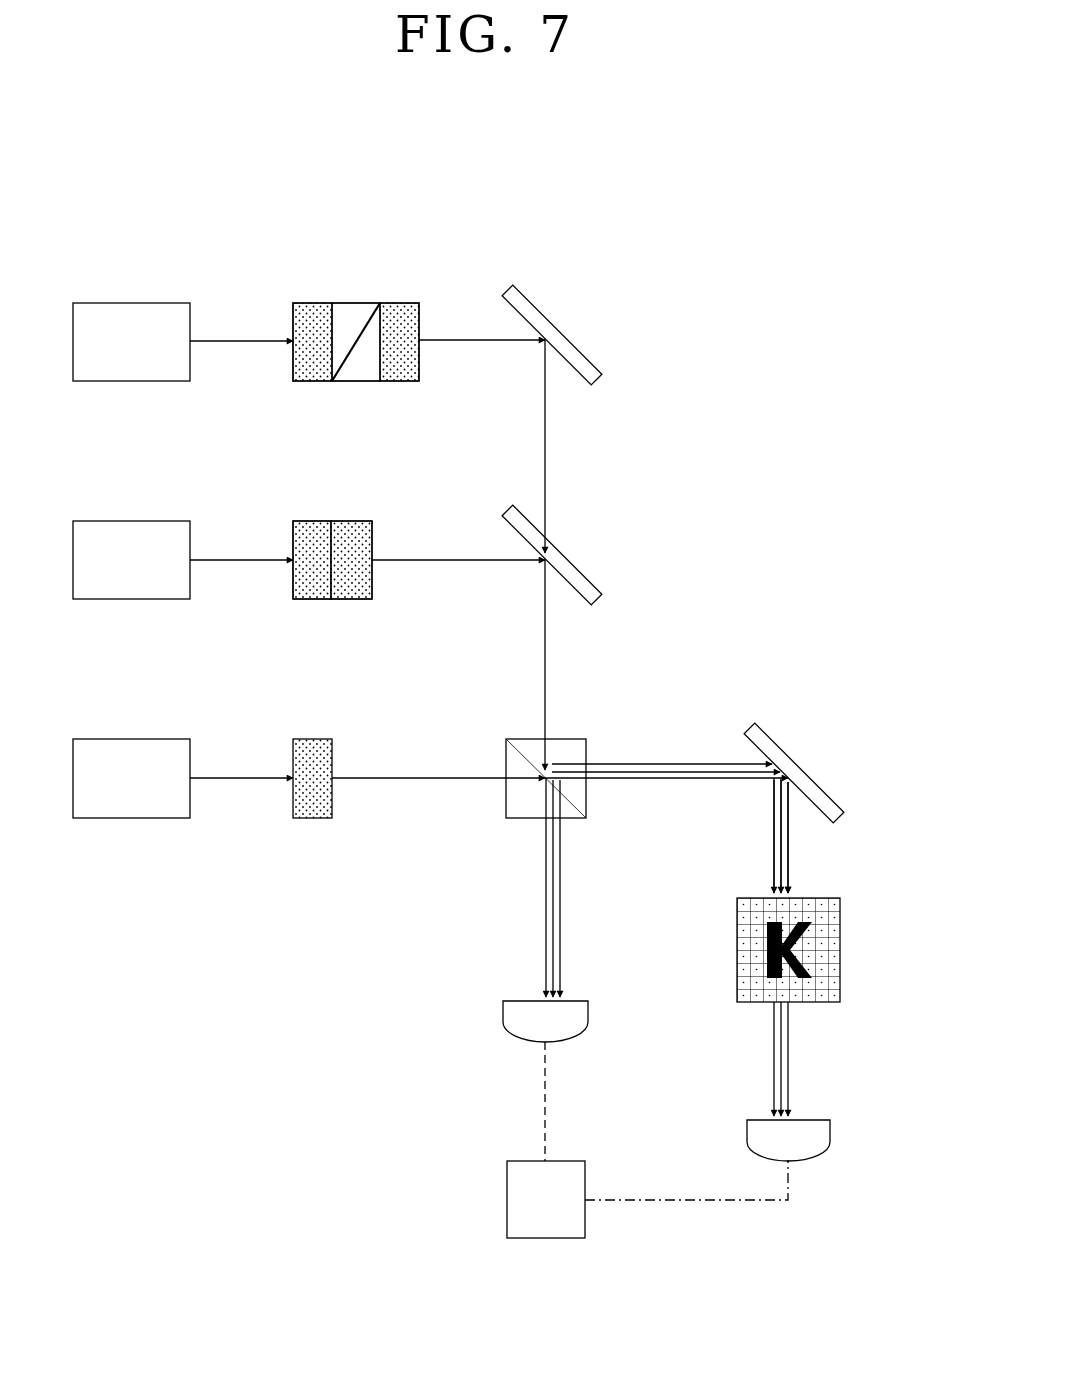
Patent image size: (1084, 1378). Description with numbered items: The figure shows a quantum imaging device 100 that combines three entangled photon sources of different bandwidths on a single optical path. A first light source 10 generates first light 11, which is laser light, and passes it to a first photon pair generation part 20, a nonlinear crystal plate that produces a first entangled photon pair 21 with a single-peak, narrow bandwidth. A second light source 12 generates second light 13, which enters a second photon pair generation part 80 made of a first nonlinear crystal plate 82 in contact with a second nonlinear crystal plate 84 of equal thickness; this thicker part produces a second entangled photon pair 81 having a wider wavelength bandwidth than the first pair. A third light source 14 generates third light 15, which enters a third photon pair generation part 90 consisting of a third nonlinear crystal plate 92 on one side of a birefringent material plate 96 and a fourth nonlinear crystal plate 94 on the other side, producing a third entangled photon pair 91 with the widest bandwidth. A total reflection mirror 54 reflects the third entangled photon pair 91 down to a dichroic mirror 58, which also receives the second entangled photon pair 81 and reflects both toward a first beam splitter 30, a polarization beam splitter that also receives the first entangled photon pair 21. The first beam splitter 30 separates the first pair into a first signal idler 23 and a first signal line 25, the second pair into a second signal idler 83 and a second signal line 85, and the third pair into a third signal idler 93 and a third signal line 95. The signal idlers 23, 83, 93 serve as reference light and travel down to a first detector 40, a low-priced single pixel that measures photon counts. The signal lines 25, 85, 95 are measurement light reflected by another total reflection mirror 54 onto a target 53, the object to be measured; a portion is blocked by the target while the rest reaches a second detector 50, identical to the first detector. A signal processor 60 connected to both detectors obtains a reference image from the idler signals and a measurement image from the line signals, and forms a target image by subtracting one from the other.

The quantum imaging device 100 is at (771, 238).
The first light source 10 is at (157, 739).
The first light 11 is at (240, 778).
The second light source 12 is at (157, 521).
The second light 13 is at (240, 560).
The third light source 14 is at (157, 303).
The third light 15 is at (240, 341).
The first photon pair generation part 20 is at (310, 739).
The first entangled photon pair 21 is at (400, 778).
The first signal idler 23 is at (546, 933).
The first signal line 25 is at (710, 778).
The first beam splitter 30 is at (565, 739).
The first detector 40 is at (503, 1011).
The second detector 50 is at (831, 1129).
The target 53 is at (841, 946).
The total reflection mirror 54 is at (559, 322).
The dichroic mirror 58 is at (559, 540).
The signal processor 60 is at (568, 1161).
The second photon pair generation part 80 is at (372, 449).
The second entangled photon pair 81 is at (455, 560).
The first nonlinear crystal plate 82 is at (310, 521).
The second signal idler 83 is at (553, 903).
The second nonlinear crystal plate 84 is at (350, 521).
The second signal line 85 is at (665, 772).
The third photon pair generation part 90 is at (300, 230).
The third entangled photon pair 91 is at (455, 340).
The third nonlinear crystal plate 92 is at (310, 303).
The third signal idler 93 is at (560, 871).
The fourth nonlinear crystal plate 94 is at (395, 303).
The third signal line 95 is at (622, 764).
The birefringent material plate 96 is at (352, 303).